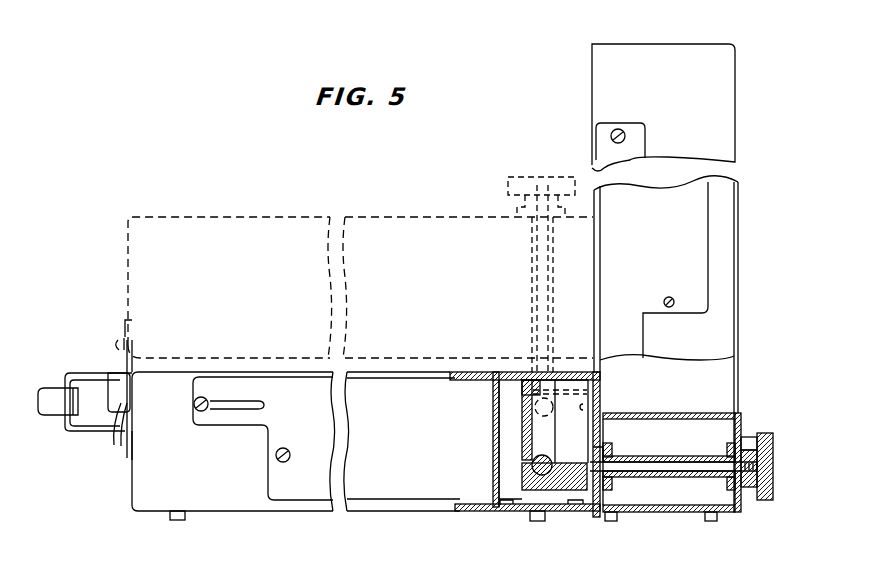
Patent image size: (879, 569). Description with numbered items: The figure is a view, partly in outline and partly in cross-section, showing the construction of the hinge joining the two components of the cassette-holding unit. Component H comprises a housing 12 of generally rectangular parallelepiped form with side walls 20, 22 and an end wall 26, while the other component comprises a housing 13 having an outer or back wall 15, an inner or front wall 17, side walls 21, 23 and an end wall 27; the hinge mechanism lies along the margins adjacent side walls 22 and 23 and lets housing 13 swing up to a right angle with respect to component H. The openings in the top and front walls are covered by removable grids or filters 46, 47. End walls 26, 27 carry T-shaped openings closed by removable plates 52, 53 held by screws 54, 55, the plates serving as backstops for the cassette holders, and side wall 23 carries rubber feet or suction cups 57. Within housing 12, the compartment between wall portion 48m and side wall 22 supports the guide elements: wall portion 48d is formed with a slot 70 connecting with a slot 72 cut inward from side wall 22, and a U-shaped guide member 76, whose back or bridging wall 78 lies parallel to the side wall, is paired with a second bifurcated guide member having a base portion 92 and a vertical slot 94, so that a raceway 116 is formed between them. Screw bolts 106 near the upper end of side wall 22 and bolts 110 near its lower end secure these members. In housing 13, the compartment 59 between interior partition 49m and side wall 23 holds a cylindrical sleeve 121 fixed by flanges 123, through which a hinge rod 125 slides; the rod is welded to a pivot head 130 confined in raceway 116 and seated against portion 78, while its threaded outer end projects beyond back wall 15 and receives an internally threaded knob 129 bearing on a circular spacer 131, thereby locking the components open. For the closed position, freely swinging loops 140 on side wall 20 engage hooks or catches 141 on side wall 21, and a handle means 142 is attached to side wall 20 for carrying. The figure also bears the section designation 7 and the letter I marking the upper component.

The housing 12 is at (210, 497).
The housing 13 is at (282, 237).
The outer or back wall 15 is at (741, 218).
The inner or front wall 17 is at (590, 80).
The side wall 20 is at (130, 482).
The side wall 21 is at (714, 45).
The side wall 22 is at (597, 406).
The side wall 23 is at (727, 515).
The end wall 26 is at (243, 493).
The end wall 27 is at (715, 331).
The grid or filter 46 is at (463, 372).
The grid or filter 47 is at (594, 372).
The wall portion 48d is at (522, 384).
The wall portion 48m is at (493, 456).
The interior wall or partition 49m is at (703, 393).
The removable plate 52 is at (243, 382).
The removable plate 53 is at (695, 262).
The screws 54 is at (283, 447).
The screws 55 is at (667, 297).
The rubber feet or suction cups 57 is at (713, 523).
The compartment 59 is at (708, 430).
The slot 70 is at (562, 378).
The slot 72 is at (603, 422).
The U-shaped guide member 76 is at (512, 490).
The back or bridging wall 78 is at (535, 428).
The base portion 92 is at (615, 462).
The slot 94 is at (603, 462).
The screw bolts 106 is at (540, 381).
The bolts 110 is at (548, 506).
The raceway 116 is at (540, 428).
The cylindrical sleeve 121 is at (690, 464).
The flange 123 is at (730, 441).
The hinge rod 125 is at (697, 468).
The internally threaded knob 129 is at (774, 443).
The pivot head 130 is at (540, 474).
The circular spacer 131 is at (741, 443).
The freely swinging loop 140 is at (127, 353).
The hook or catch 141 is at (126, 329).
The handle means 142 is at (50, 396).
The component H is at (148, 515).
The cover assembly I is at (217, 213).
The section line 7- 7 is at (510, 483).